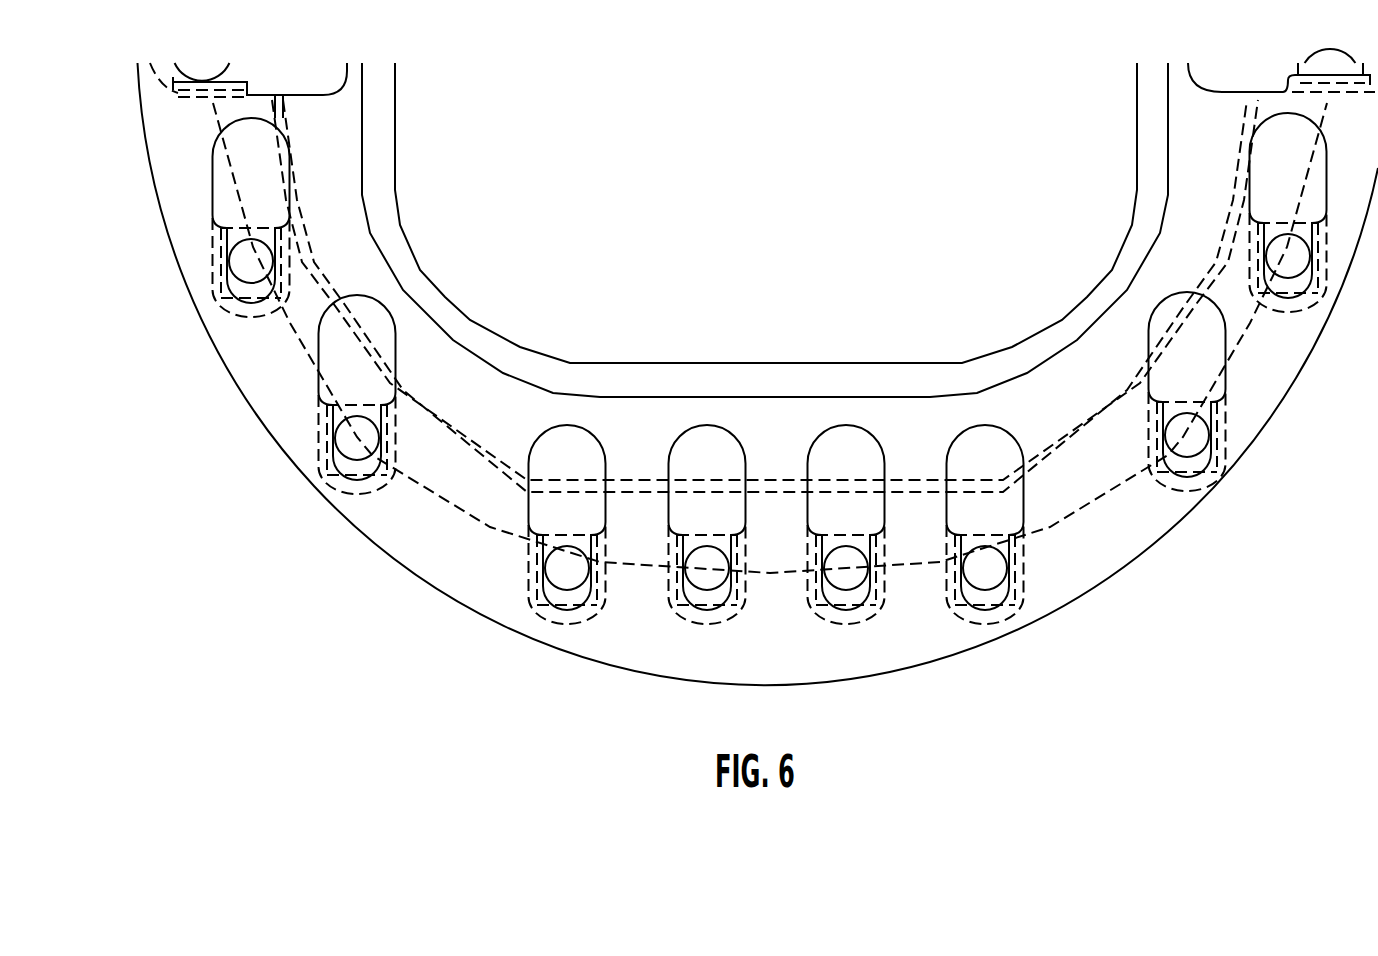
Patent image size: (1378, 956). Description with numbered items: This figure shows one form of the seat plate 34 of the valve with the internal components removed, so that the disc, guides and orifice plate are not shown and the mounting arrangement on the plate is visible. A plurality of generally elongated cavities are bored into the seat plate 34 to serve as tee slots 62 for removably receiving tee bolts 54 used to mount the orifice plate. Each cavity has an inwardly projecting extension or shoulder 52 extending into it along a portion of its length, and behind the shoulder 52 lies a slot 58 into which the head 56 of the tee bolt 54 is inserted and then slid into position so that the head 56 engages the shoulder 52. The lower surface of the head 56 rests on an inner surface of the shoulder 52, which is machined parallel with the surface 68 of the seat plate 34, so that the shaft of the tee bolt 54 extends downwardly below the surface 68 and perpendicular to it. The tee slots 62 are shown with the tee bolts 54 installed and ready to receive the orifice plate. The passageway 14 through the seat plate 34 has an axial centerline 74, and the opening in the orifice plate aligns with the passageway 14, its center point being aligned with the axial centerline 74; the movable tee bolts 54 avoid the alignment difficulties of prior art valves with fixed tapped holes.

The passageway 14 is at (795, 165).
The seat plate 34 is at (390, 560).
The shoulder 52 is at (212, 278).
The tee bolt 54 is at (250, 284).
The head 56 is at (263, 224).
The slot 58 is at (229, 127).
The tee slot 62 is at (212, 200).
The surface 68 is at (1074, 413).
The axial centerline 74 is at (897, 152).